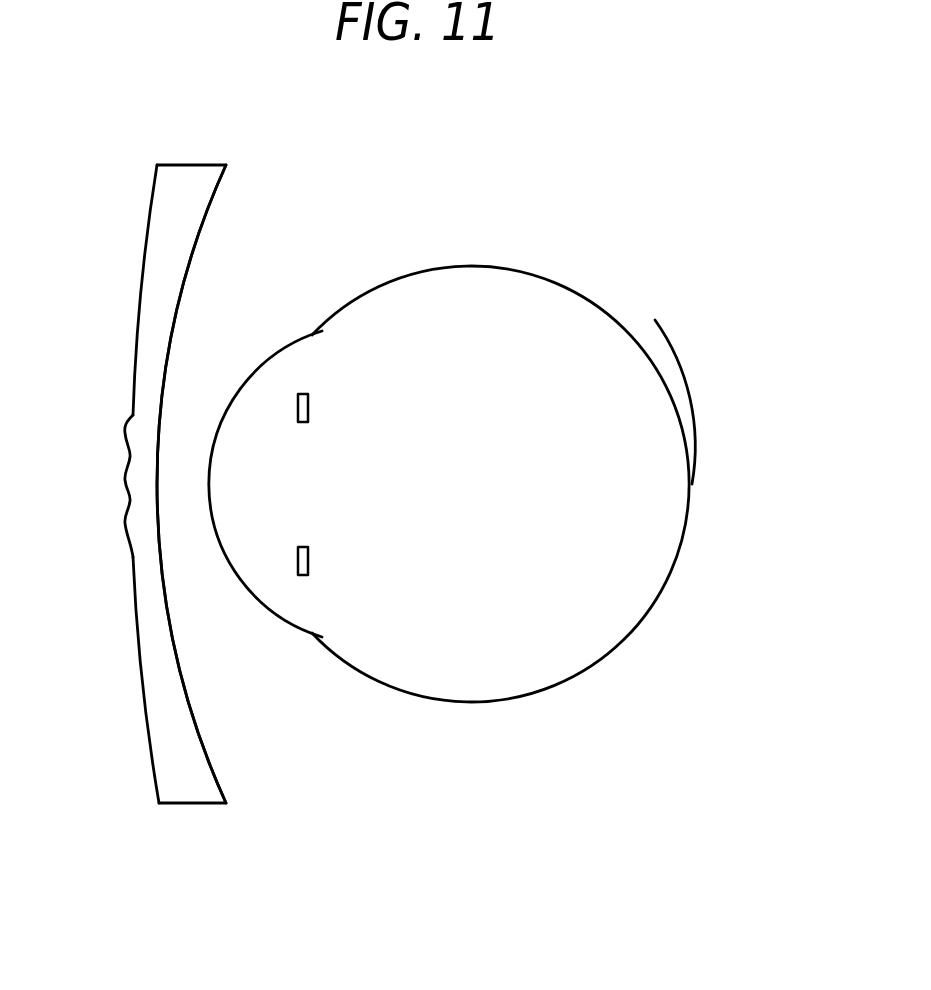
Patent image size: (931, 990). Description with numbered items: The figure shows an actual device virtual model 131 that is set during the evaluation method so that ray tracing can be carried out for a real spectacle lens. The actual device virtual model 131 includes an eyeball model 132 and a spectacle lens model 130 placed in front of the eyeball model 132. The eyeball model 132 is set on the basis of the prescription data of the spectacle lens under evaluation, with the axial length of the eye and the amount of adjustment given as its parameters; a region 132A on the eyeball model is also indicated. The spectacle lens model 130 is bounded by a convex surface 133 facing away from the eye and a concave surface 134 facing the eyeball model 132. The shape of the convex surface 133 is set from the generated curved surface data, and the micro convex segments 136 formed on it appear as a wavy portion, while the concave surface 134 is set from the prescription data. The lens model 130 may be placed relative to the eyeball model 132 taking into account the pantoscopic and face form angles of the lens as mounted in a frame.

The spectacle lens model 130 is at (189, 165).
The actual device virtual model 131 is at (492, 430).
The eyeball model 132 is at (626, 325).
The eyeball surface region 132A is at (674, 398).
The convex surface 133 is at (136, 357).
The concave surface 134 is at (179, 300).
The wavy structure on outer surface 136 is at (127, 435).